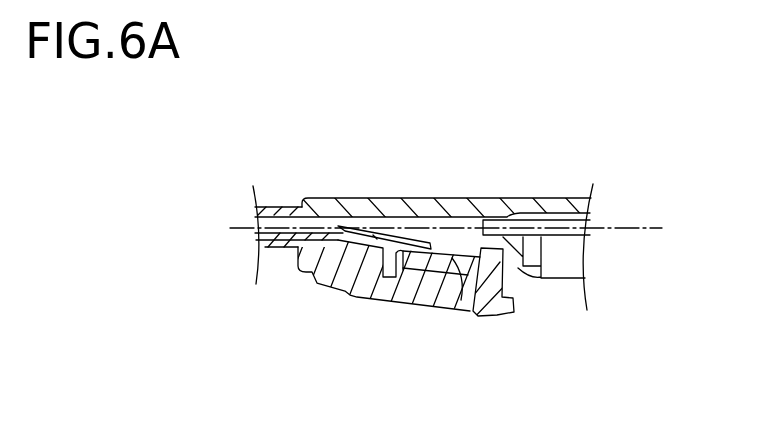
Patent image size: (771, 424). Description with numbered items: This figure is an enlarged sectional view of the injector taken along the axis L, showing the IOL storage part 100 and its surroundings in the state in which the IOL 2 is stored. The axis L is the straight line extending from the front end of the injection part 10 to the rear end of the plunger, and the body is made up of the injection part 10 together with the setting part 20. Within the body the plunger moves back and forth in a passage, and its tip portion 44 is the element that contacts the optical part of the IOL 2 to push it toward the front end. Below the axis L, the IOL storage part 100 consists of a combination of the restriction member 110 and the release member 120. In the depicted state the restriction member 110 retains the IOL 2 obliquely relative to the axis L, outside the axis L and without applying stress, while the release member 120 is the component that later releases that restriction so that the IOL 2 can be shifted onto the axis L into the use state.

The IOL 2 is at (400, 226).
The injection part 10 is at (286, 207).
The setting part 20 is at (457, 200).
The tip portion 44 is at (482, 219).
The IOL storage part 100 is at (392, 325).
The restriction member 110 is at (460, 292).
The release member 120 is at (386, 290).
The axis L is at (653, 229).